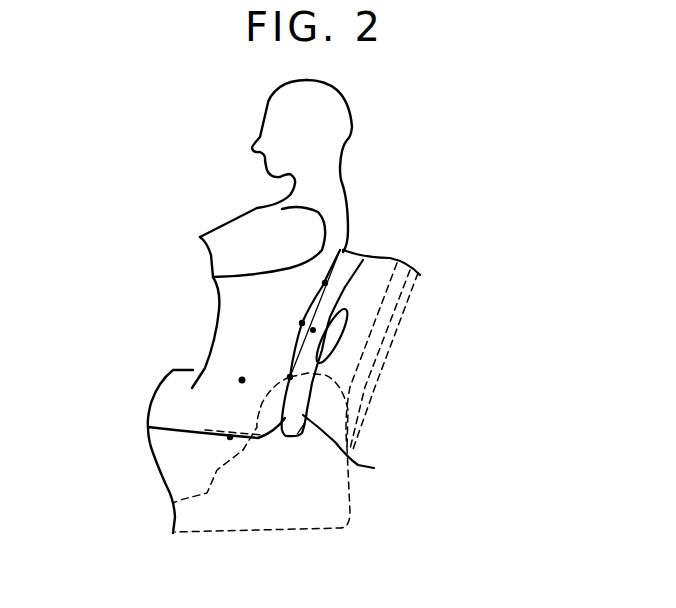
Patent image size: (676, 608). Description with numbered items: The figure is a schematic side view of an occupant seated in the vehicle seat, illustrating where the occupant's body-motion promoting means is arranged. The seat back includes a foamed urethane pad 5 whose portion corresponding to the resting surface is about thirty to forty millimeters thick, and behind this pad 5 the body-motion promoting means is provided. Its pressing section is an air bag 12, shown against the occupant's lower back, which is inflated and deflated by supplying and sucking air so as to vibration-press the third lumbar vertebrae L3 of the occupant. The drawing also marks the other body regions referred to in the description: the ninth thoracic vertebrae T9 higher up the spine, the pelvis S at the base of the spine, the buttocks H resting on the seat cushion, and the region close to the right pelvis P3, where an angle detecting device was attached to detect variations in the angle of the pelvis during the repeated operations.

The foamed urethane pad 5 is at (349, 450).
The air bag 12 is at (340, 357).
The thoracic vertebrae T9 is at (325, 283).
The third lumbar vertebrae L3 is at (302, 323).
The pelvis S is at (290, 377).
The right pelvis P3 is at (242, 380).
The buttocks H is at (230, 437).